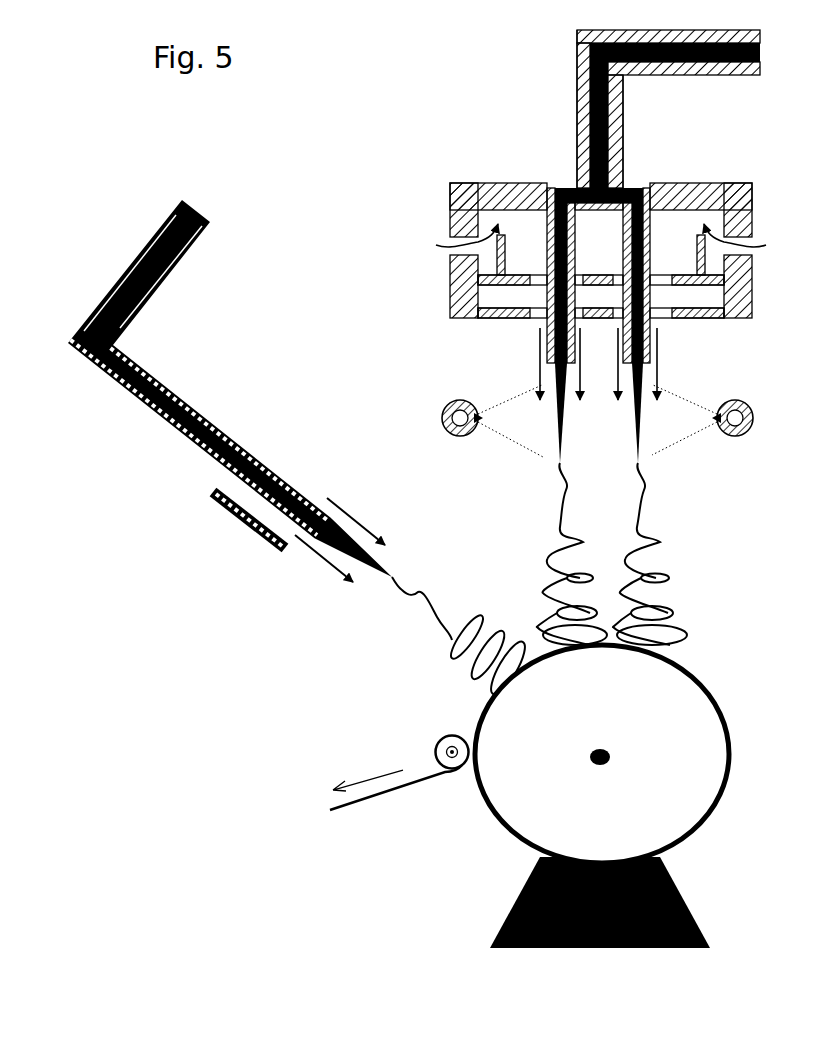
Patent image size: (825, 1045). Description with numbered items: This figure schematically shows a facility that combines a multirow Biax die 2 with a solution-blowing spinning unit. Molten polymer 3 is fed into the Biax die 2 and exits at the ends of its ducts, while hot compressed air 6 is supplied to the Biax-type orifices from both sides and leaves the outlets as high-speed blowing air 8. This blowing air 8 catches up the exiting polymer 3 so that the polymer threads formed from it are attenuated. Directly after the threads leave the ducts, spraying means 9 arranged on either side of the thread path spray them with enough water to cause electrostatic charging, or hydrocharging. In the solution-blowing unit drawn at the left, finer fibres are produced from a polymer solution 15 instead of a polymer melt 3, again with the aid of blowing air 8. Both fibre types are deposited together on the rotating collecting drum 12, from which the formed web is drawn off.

The multirow Biax die 2 is at (700, 180).
The molten polymer 3 is at (760, 52).
The hot compressed air 6 is at (602, 233).
The high-speed blowing air 8 is at (657, 352).
The spraying means 9 is at (750, 408).
The collecting drum 12 is at (720, 718).
The polymer solution 15 is at (197, 208).